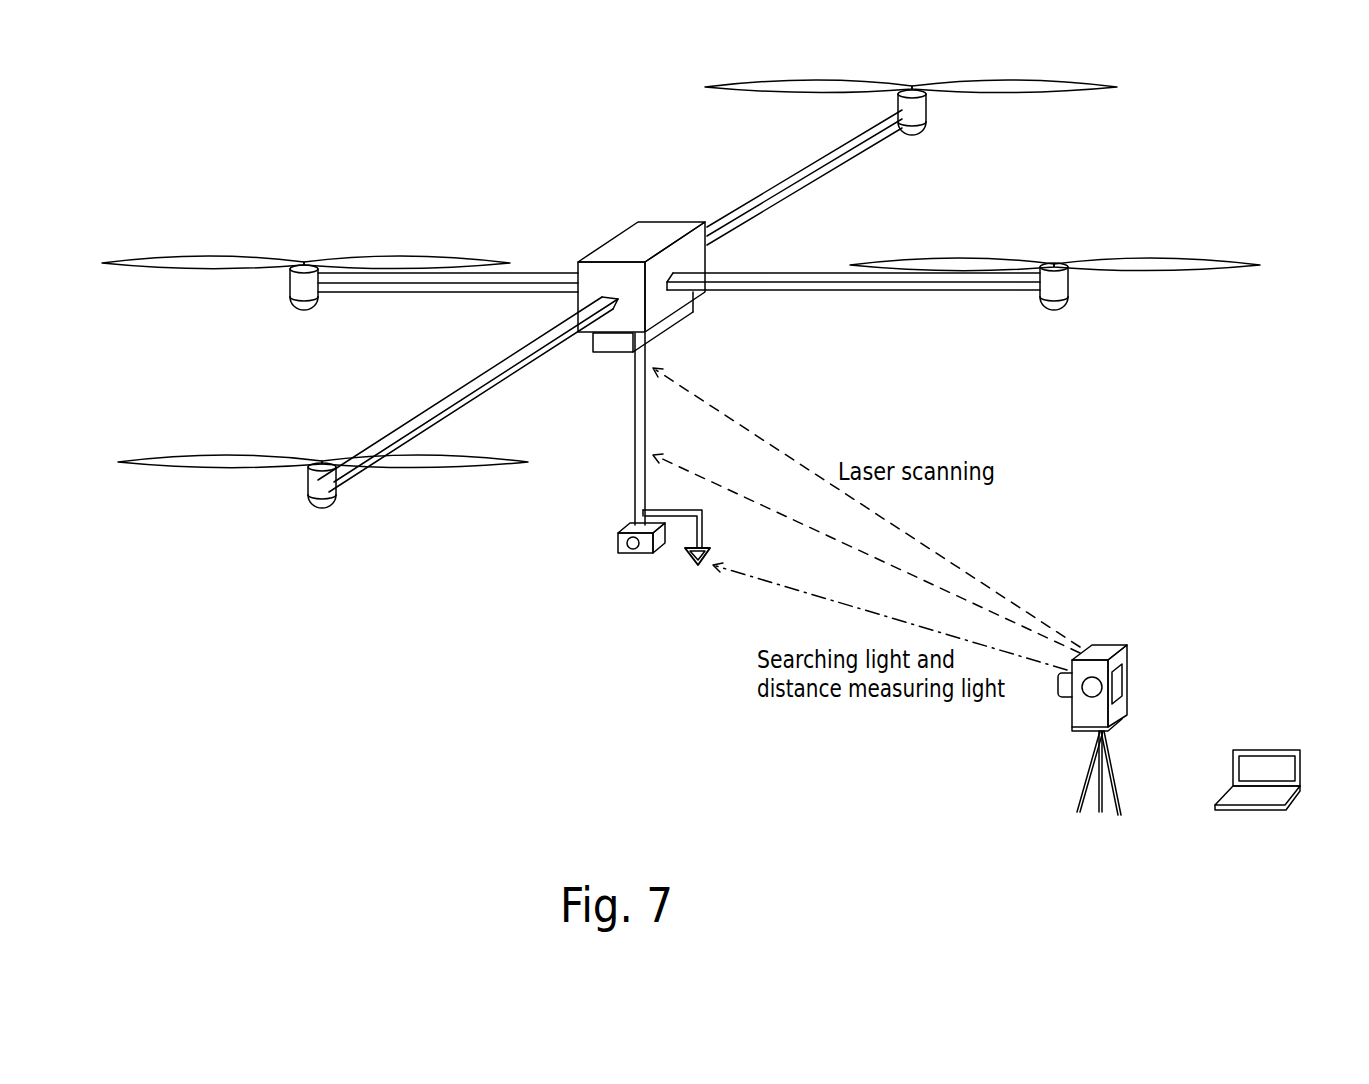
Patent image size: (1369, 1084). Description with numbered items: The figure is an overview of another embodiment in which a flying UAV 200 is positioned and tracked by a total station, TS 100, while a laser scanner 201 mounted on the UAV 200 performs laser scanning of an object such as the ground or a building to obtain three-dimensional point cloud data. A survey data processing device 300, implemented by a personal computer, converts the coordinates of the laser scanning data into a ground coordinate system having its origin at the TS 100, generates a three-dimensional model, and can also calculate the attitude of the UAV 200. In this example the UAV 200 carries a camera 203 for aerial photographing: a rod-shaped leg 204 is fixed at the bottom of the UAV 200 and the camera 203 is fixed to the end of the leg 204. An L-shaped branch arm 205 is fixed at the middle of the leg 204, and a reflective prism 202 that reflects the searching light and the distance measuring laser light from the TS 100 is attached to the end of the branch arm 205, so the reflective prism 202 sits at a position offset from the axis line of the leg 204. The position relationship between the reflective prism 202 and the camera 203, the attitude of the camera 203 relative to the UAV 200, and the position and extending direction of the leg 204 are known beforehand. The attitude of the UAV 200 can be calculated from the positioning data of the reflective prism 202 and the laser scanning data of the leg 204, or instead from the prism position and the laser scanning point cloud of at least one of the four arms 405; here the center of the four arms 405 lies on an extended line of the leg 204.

The total station (TS) 100 is at (1218, 703).
The UAV 200 is at (628, 242).
The laser scanner 201 is at (660, 328).
The reflective prism 202 is at (695, 565).
The camera 203 is at (622, 553).
The leg 204 is at (635, 425).
The branch arm 205 is at (683, 517).
The survey data processing device 300 is at (1248, 795).
The arms 405 is at (757, 193).